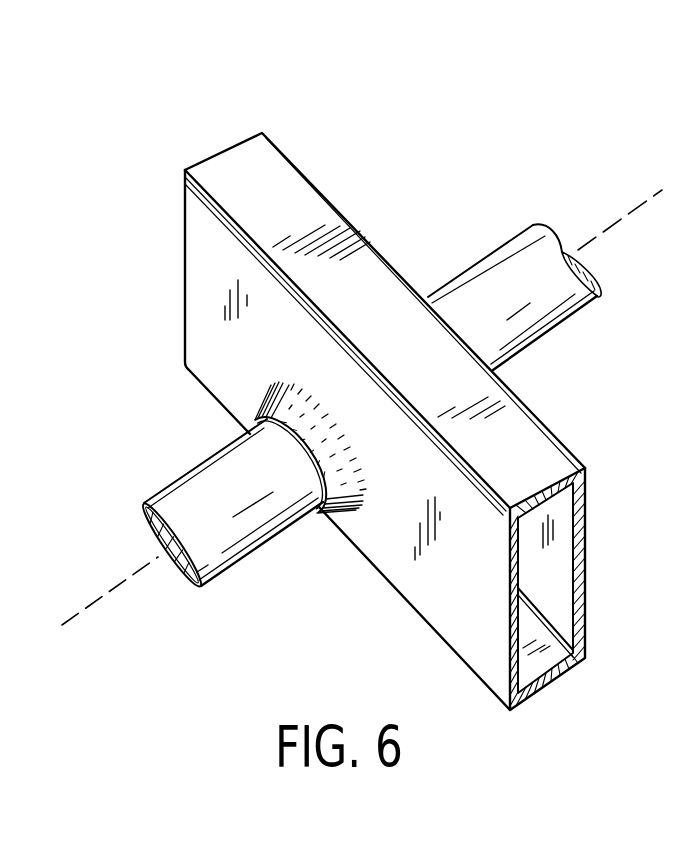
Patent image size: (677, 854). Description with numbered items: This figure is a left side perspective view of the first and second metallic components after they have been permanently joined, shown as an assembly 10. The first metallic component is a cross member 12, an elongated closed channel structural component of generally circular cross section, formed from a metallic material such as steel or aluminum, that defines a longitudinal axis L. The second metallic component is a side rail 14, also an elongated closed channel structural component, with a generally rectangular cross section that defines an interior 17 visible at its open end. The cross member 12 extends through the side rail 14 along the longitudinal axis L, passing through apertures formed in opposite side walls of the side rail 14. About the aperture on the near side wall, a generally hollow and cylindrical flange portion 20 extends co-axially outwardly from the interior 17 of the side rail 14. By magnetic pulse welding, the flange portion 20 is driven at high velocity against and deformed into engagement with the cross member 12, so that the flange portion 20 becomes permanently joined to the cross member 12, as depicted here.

The tube assembly 10 is at (456, 151).
The cross member 12 is at (500, 266).
The side rail 14 is at (257, 178).
The interior 17 is at (540, 568).
The flange portion 20 is at (346, 436).
The longitudinal axis L is at (78, 615).